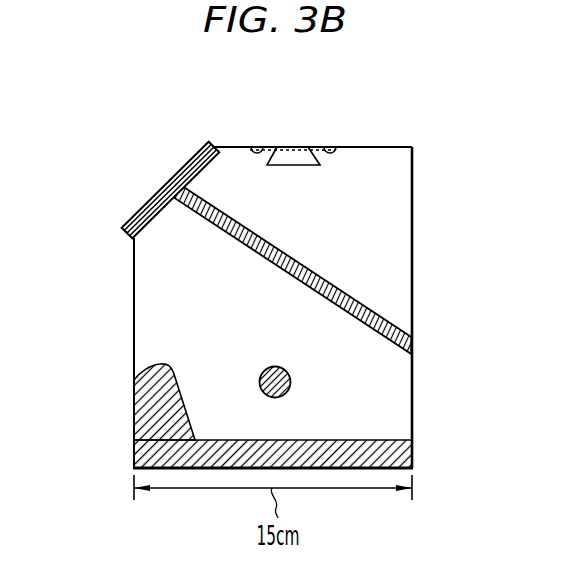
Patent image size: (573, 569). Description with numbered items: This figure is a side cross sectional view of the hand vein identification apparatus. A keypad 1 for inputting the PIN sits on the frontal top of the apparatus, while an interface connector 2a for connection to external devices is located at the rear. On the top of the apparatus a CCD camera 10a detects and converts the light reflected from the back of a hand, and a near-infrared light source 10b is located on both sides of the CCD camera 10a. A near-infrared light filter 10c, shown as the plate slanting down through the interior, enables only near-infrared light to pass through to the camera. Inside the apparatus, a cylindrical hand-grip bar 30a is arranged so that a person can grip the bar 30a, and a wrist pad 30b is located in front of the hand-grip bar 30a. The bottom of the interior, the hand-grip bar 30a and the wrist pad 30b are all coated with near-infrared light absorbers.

The keypad 1 is at (166, 184).
The CCD camera 10a is at (291, 150).
The near-infrared light source 10b is at (332, 152).
The near-infrared light filter 10c is at (373, 310).
The cylindrical hand-grip bar 30a is at (292, 386).
The wrist pad 30b is at (134, 410).
The interface connector 2a is at (412, 455).